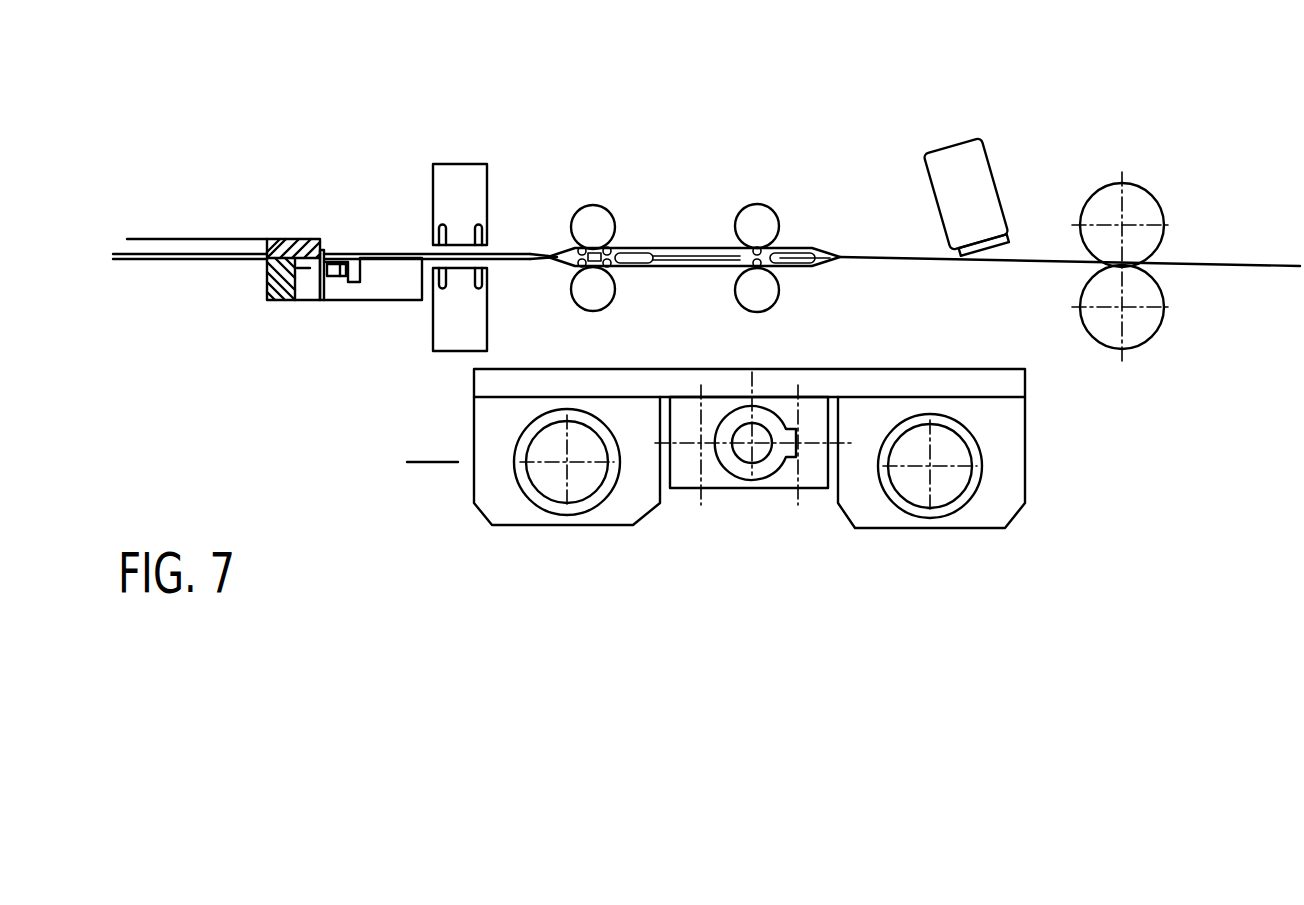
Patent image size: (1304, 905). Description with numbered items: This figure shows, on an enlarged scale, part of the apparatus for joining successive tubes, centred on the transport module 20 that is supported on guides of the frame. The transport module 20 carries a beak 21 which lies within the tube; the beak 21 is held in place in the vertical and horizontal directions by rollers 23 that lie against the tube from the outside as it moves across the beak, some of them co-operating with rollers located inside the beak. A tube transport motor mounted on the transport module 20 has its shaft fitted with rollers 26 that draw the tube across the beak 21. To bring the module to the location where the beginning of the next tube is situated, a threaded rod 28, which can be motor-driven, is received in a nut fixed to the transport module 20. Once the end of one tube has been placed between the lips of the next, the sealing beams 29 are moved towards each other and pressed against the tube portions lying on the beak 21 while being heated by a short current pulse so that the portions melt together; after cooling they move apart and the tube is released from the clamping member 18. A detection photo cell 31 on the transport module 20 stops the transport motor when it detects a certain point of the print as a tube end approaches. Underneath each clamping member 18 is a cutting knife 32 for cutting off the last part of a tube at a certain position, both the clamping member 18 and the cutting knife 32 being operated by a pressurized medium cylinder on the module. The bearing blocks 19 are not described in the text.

The clamping member 18 is at (283, 239).
The bearing blocks 19 is at (573, 478).
The transport module 20 is at (767, 490).
The beak 21 is at (678, 247).
The rollers 23 is at (590, 218).
The rollers 26 is at (1108, 202).
The threaded rod 28 is at (753, 452).
The sealing beams 29 is at (448, 183).
The detection photo cell 31 is at (945, 162).
The cutting knife 32 is at (320, 300).